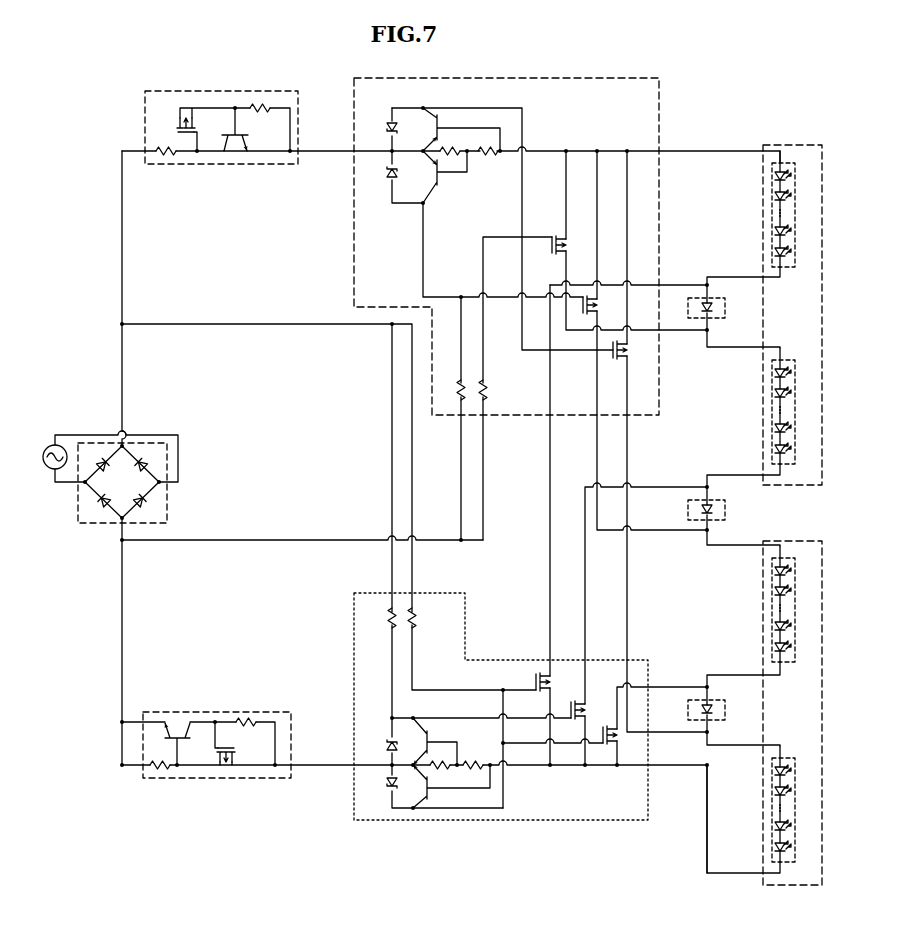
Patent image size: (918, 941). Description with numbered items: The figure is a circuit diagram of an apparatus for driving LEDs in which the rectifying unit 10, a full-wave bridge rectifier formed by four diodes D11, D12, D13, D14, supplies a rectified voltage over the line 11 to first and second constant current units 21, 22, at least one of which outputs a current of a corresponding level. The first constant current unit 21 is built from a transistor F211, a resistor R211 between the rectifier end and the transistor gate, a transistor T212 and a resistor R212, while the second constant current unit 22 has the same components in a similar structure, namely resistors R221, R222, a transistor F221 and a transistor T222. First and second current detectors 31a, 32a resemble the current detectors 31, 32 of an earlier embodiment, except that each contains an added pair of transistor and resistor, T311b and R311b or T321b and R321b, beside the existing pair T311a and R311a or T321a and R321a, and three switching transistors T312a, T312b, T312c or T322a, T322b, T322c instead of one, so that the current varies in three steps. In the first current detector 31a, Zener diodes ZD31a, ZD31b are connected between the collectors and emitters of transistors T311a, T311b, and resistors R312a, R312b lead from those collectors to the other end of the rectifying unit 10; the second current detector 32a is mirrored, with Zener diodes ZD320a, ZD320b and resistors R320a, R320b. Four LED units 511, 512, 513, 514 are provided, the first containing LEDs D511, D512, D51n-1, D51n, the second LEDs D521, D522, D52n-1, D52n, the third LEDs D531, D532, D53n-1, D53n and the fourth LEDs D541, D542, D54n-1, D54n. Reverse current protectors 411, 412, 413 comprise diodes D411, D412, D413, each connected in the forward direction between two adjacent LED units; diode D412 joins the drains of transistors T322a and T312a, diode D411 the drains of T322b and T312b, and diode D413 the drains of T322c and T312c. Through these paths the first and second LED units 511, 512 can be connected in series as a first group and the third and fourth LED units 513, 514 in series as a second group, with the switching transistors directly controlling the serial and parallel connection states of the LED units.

The rectifying unit 10 is at (104, 491).
The rectified voltage output line 11 is at (326, 150).
The first constant current unit 21 is at (226, 117).
The second constant current unit 22 is at (205, 758).
The current detector 31 is at (810, 315).
The current detector 32 is at (810, 713).
The first current detector 31a is at (530, 395).
The second current detector 32a is at (413, 584).
The reverse current protector 411 is at (722, 508).
The reverse current protector 412 is at (722, 306).
The reverse current protector 413 is at (722, 708).
The first LED unit 511 is at (799, 209).
The second LED unit 512 is at (799, 399).
The third LED unit 513 is at (799, 604).
The fourth LED unit 514 is at (799, 797).
The diode D11 is at (97, 463).
The diode D12 is at (146, 460).
The diode D13 is at (146, 503).
The diode D14 is at (99, 503).
The first resistor R211 is at (166, 146).
The second resistor R212 is at (260, 104).
The FET F211 is at (185, 114).
The second transistor T212 is at (235, 135).
The first resistor R221 is at (246, 727).
The second resistor R222 is at (160, 769).
The FET F221 is at (226, 763).
The second transistor T222 is at (176, 738).
The Zener diode ZD31a is at (378, 128).
The Zener diode ZD31b is at (378, 172).
The transistor T311a is at (461, 129).
The transistor T311b is at (436, 177).
The resistor R311a is at (452, 146).
The resistor R311b is at (489, 146).
The transistor T312a is at (572, 245).
The transistor T312b is at (603, 305).
The transistor T312c is at (633, 350).
The resistor R312a is at (449, 390).
The resistor R312b is at (496, 390).
The resistor R320a is at (380, 618).
The resistor R320b is at (425, 618).
The zener diode ZD320a is at (376, 783).
The zener diode ZD320b is at (376, 745).
The transistor T321a is at (451, 786).
The transistor T321b is at (434, 742).
The resistor R321a is at (443, 769).
The resistor R321b is at (476, 760).
The transistor T322a is at (556, 682).
The transistor T322b is at (591, 710).
The transistor T322c is at (623, 735).
The diode D411 is at (712, 512).
The diode D412 is at (712, 310).
The diode D413 is at (712, 712).
The LED D511 is at (797, 176).
The LED D512 is at (797, 196).
The LED D51n-1 is at (801, 231).
The LED D51n is at (797, 252).
The LED D521 is at (797, 373).
The LED D522 is at (797, 393).
The LED D52n-1 is at (801, 428).
The LED D52n is at (797, 449).
The LED D531 is at (797, 571).
The LED D532 is at (797, 591).
The LED D53n-1 is at (801, 626).
The LED D53n is at (797, 647).
The LED D541 is at (797, 771).
The LED D542 is at (797, 791).
The LED D54n-1 is at (801, 826).
The LED D54n is at (797, 847).